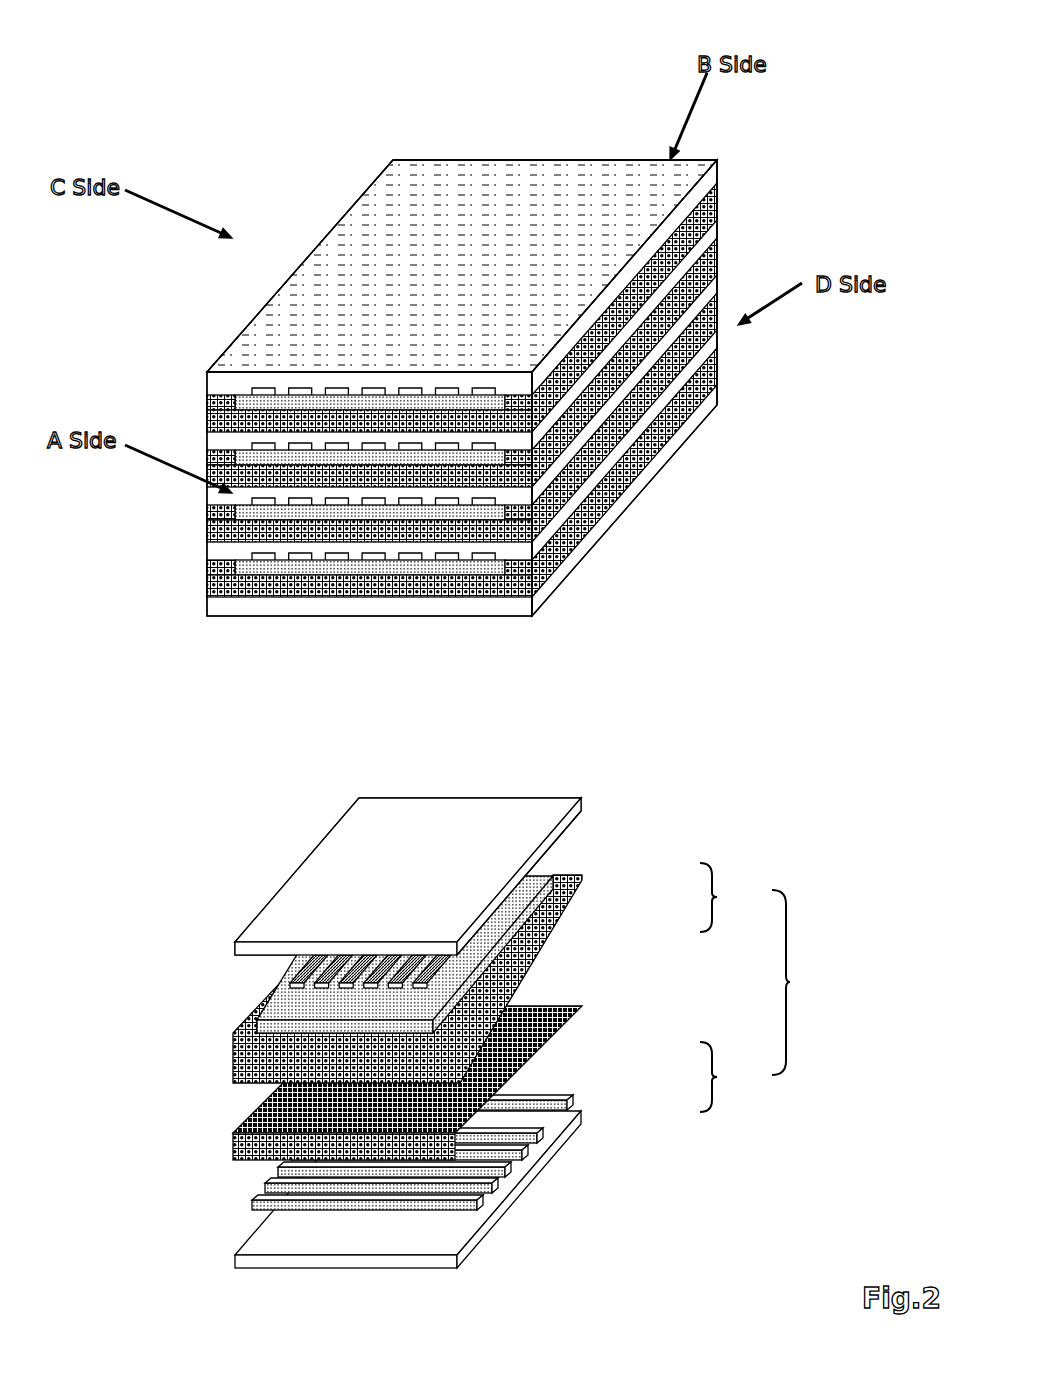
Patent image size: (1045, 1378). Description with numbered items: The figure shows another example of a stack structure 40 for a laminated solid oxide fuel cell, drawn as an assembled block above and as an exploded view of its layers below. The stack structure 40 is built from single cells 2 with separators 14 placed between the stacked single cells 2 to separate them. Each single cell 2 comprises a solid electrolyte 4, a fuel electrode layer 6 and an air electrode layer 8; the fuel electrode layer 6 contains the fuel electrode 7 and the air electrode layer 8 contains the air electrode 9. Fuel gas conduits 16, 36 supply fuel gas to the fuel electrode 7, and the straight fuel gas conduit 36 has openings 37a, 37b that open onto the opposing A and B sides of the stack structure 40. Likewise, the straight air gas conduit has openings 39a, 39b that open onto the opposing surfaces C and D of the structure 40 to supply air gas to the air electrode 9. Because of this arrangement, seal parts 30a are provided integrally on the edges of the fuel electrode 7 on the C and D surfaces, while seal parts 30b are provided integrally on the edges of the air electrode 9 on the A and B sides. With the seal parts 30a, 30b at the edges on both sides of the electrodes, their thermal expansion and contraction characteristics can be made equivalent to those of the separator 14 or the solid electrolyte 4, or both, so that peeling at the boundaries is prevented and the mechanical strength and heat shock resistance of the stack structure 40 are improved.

The single cell 2 is at (802, 982).
The solid electrolyte 4 is at (707, 372).
The fuel electrode layer 6 is at (240, 513).
The fuel electrode 7 is at (443, 963).
The air electrode layer 8 is at (693, 407).
The air electrode 9 is at (490, 1067).
The separator 14 is at (643, 477).
The fuel gas conduit 16 is at (548, 868).
The seal part 30a is at (530, 880).
The seal part 30b is at (580, 1005).
The fuel gas conduit 36 is at (370, 973).
The opening 37a is at (253, 392).
The opening 37b is at (538, 160).
The opening 39a is at (315, 248).
The opening 39b is at (660, 282).
The stack structure 40 is at (474, 637).